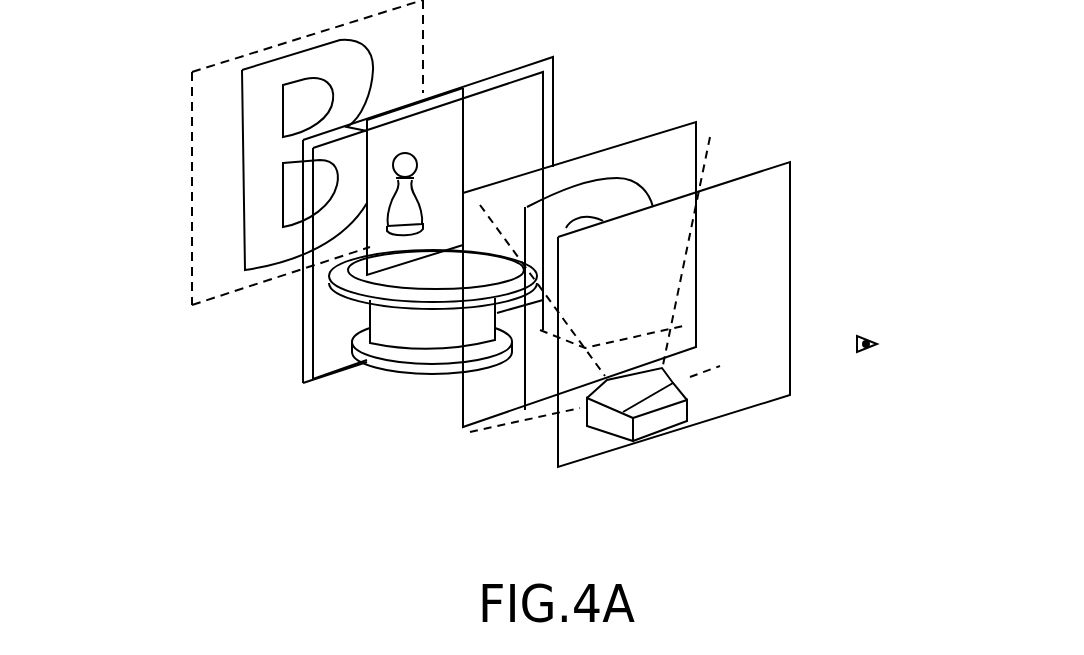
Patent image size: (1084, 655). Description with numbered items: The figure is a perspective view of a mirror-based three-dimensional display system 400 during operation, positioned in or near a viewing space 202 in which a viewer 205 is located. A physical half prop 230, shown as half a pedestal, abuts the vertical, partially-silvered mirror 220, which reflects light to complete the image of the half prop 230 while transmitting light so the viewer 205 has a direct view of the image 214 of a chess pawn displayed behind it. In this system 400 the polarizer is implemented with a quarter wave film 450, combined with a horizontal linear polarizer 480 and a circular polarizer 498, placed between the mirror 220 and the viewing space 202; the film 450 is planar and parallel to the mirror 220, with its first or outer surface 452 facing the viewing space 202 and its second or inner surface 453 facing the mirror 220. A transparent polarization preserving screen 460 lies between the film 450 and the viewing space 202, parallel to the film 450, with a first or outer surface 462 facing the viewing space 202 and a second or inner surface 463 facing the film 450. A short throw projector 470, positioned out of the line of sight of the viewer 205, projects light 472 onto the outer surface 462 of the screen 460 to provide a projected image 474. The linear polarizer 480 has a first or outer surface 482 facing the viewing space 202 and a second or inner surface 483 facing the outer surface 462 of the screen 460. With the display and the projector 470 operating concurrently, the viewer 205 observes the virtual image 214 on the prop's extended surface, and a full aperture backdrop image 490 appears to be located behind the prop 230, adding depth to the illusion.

The mirror-based 3D display system 400 is at (138, 150).
The full aperture backdrop image 490 is at (177, 288).
The circular polarizer 498 is at (303, 340).
The half-silvered mirror 220 is at (576, 52).
The transparent polarization preserving screen 460 is at (520, 428).
The image 214 is at (423, 207).
The half prop 230 is at (397, 367).
The quarter wave film 450 is at (690, 162).
The first or outer surface of the quarter wave film 452 is at (693, 122).
The second or inner surface of the quarter wave film 453 is at (690, 150).
The first or outer surface of the screen 462 is at (468, 420).
The second or inner surface of the screen 463 is at (466, 403).
The projected image 474 is at (525, 412).
The projected light 472 is at (683, 327).
The short throw projector 470 is at (613, 437).
The horizontal linear polarizer 480 is at (758, 410).
The first or outer surface of the linear polarizer 482 is at (770, 243).
The second or inner surface of the linear polarizer 483 is at (790, 168).
The viewer 205 is at (897, 326).
The viewing space 202 is at (877, 513).